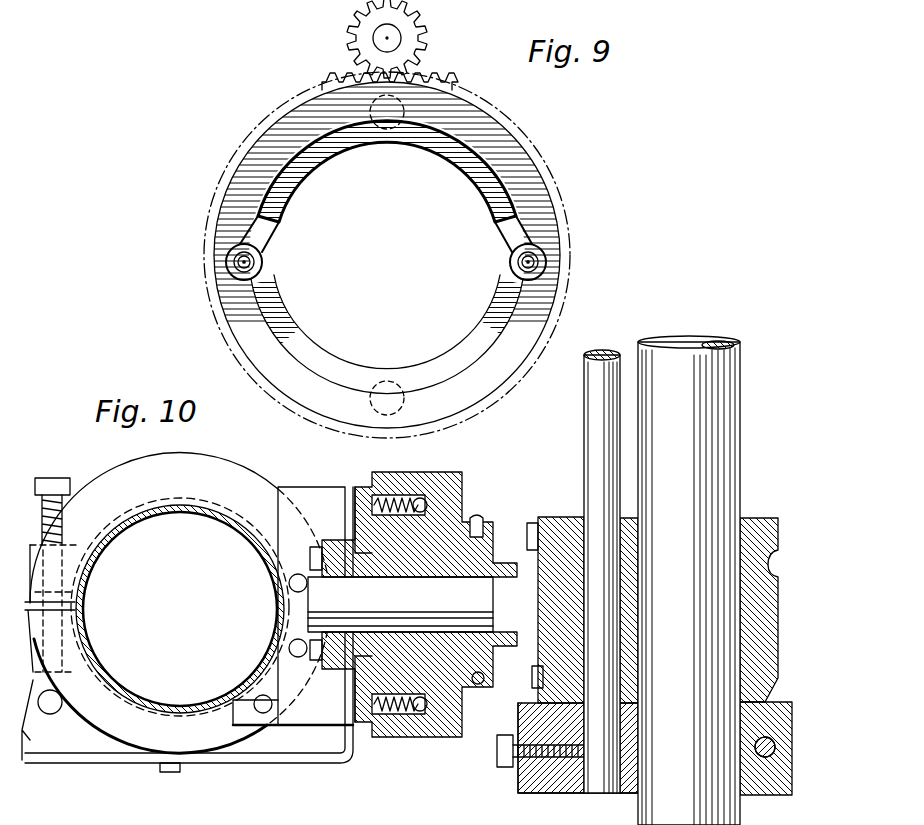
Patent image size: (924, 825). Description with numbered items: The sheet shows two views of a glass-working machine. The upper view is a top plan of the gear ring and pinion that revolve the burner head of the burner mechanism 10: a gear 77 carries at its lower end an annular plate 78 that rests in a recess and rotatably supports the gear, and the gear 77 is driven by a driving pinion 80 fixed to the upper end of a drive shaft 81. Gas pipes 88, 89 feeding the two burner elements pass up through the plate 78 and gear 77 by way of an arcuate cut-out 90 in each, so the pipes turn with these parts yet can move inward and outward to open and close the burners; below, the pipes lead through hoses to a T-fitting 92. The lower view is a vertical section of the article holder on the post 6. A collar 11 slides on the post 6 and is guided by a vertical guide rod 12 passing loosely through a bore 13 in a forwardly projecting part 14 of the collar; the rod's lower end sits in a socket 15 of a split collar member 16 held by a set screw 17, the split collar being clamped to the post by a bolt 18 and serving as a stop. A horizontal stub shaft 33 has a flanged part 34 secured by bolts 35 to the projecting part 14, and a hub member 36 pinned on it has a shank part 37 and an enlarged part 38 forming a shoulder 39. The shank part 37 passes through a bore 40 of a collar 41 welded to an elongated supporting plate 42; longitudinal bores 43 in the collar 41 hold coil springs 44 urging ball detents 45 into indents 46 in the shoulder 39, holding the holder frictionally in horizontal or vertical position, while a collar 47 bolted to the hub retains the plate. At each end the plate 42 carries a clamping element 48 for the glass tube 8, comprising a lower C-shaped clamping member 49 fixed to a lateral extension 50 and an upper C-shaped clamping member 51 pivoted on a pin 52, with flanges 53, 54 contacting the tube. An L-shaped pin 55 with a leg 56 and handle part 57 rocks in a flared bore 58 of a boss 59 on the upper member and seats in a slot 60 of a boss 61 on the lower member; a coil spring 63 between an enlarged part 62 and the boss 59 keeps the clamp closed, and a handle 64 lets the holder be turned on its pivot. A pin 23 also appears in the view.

In FIG. 10, the post 6 is at (740, 415).
In FIG. 10, the glass tube 8 is at (196, 700).
In FIG. 9, the burner mechanism 10 is at (580, 189).
In FIG. 10, the collar 11 is at (758, 518).
In FIG. 10, the guide rod 12 is at (584, 412).
In FIG. 10, the bore 13 is at (575, 528).
In FIG. 10, the forwardly projecting part 14 is at (570, 517).
In FIG. 10, the socket 15 is at (570, 793).
In FIG. 10, the split collar member 16 is at (525, 793).
In FIG. 10, the set screw 17 is at (500, 767).
In FIG. 10, the bolt 18 is at (770, 740).
In FIG. 10, the pin 23 is at (515, 719).
In FIG. 10, the stub shaft 33 is at (484, 683).
In FIG. 10, the flanged part 34 is at (555, 517).
In FIG. 10, the bolts 35 is at (527, 530).
In FIG. 10, the hub member 36 is at (470, 520).
In FIG. 10, the shank part 37 is at (352, 492).
In FIG. 10, the enlarged part 38 is at (440, 745).
In FIG. 10, the shoulder 39 is at (440, 472).
In FIG. 10, the bore 40 is at (466, 700).
In FIG. 10, the collar 41 is at (400, 737).
In FIG. 10, the supporting plate 42 is at (362, 737).
In FIG. 10, the longitudinal bores 43 is at (393, 490).
In FIG. 10, the coil springs 44 is at (385, 737).
In FIG. 10, the ball detents 45 is at (440, 472).
In FIG. 10, the indents 46 is at (112, 682).
In FIG. 10, the collar 47 is at (330, 680).
In FIG. 10, the clamping element 48 is at (125, 464).
In FIG. 10, the lower C-shaped clamping member 49 is at (118, 748).
In FIG. 10, the lateral extension 50 is at (280, 487).
In FIG. 10, the upper C-shaped clamping member 51 is at (170, 458).
In FIG. 10, the pin 52 is at (288, 586).
In FIG. 10, the flange 53 is at (145, 718).
In FIG. 10, the flange 54 is at (200, 498).
In FIG. 10, the L-shaped pin 55 is at (38, 478).
In FIG. 10, the leg 56 is at (62, 512).
In FIG. 10, the handle part 57 is at (62, 706).
In FIG. 10, the bore 58 is at (62, 595).
In FIG. 10, the boss 59 is at (70, 578).
In FIG. 10, the slot 60 is at (76, 655).
In FIG. 10, the boss 61 is at (39, 720).
In FIG. 10, the enlarged part 62 is at (60, 478).
In FIG. 10, the coil spring 63 is at (62, 528).
In FIG. 10, the handle 64 is at (132, 763).
In FIG. 9, the gear 77 is at (522, 147).
In FIG. 9, the annular plate 78 is at (300, 330).
In FIG. 9, the driving pinion 80 is at (430, 40).
In FIG. 9, the drive shaft 81 is at (373, 38).
In FIG. 9, the gas pipe 88 is at (516, 258).
In FIG. 9, the gas pipe 89 is at (254, 252).
In FIG. 9, the arcuate cut-out 90 is at (276, 267).
In FIG. 10, the T-fitting 92 is at (400, 701).